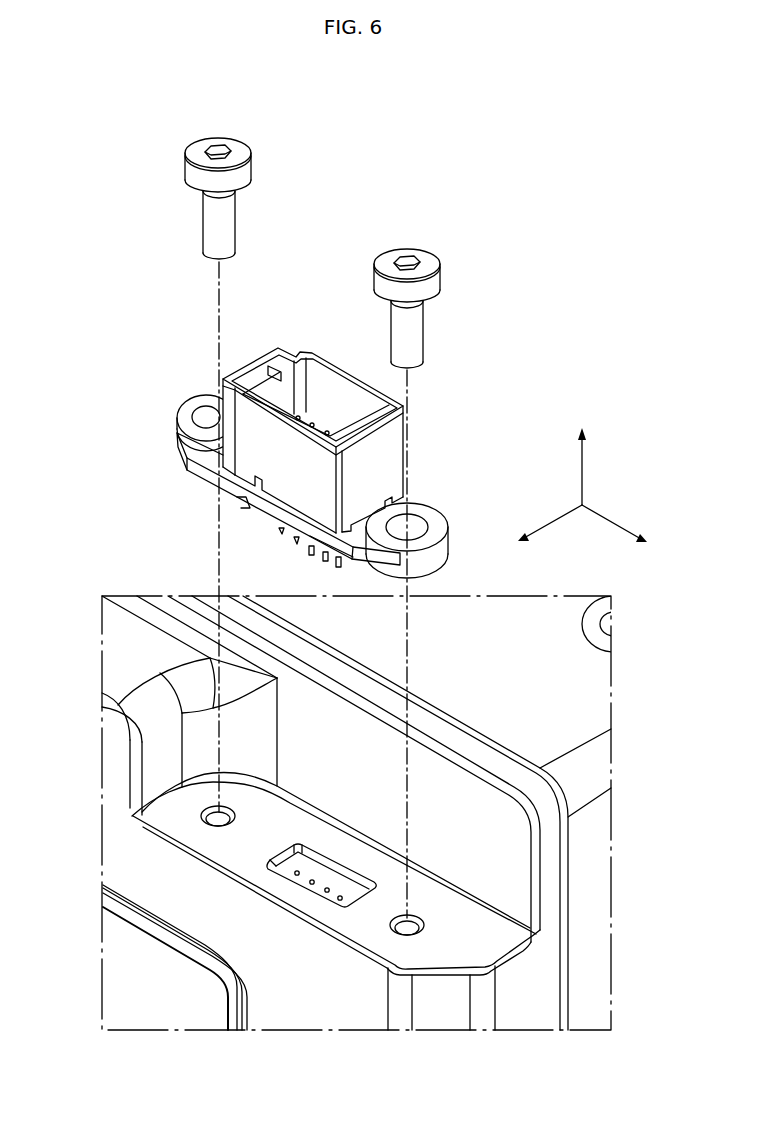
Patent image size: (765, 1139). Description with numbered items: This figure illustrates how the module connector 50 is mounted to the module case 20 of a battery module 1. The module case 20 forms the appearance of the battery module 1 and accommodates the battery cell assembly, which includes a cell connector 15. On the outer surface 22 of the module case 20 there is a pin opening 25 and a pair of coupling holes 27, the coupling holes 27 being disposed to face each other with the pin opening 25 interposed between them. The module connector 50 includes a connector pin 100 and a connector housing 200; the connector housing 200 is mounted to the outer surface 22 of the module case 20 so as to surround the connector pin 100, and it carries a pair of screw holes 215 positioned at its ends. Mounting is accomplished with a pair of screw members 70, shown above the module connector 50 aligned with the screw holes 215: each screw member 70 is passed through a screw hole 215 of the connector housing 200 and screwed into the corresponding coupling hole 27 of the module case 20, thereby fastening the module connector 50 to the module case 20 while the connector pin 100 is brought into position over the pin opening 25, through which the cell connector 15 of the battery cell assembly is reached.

The battery module 1 is at (93, 313).
The cell connector 15 is at (315, 895).
The module case 20 is at (572, 692).
The outer surface 22 is at (456, 941).
The pin opening 25 is at (268, 867).
The coupling hole 27 is at (206, 821).
The module connector 50 is at (320, 330).
The screw member 70 is at (232, 147).
The connector pin 100 is at (303, 556).
The connector housing 200 is at (228, 504).
The screw hole 215 is at (207, 417).